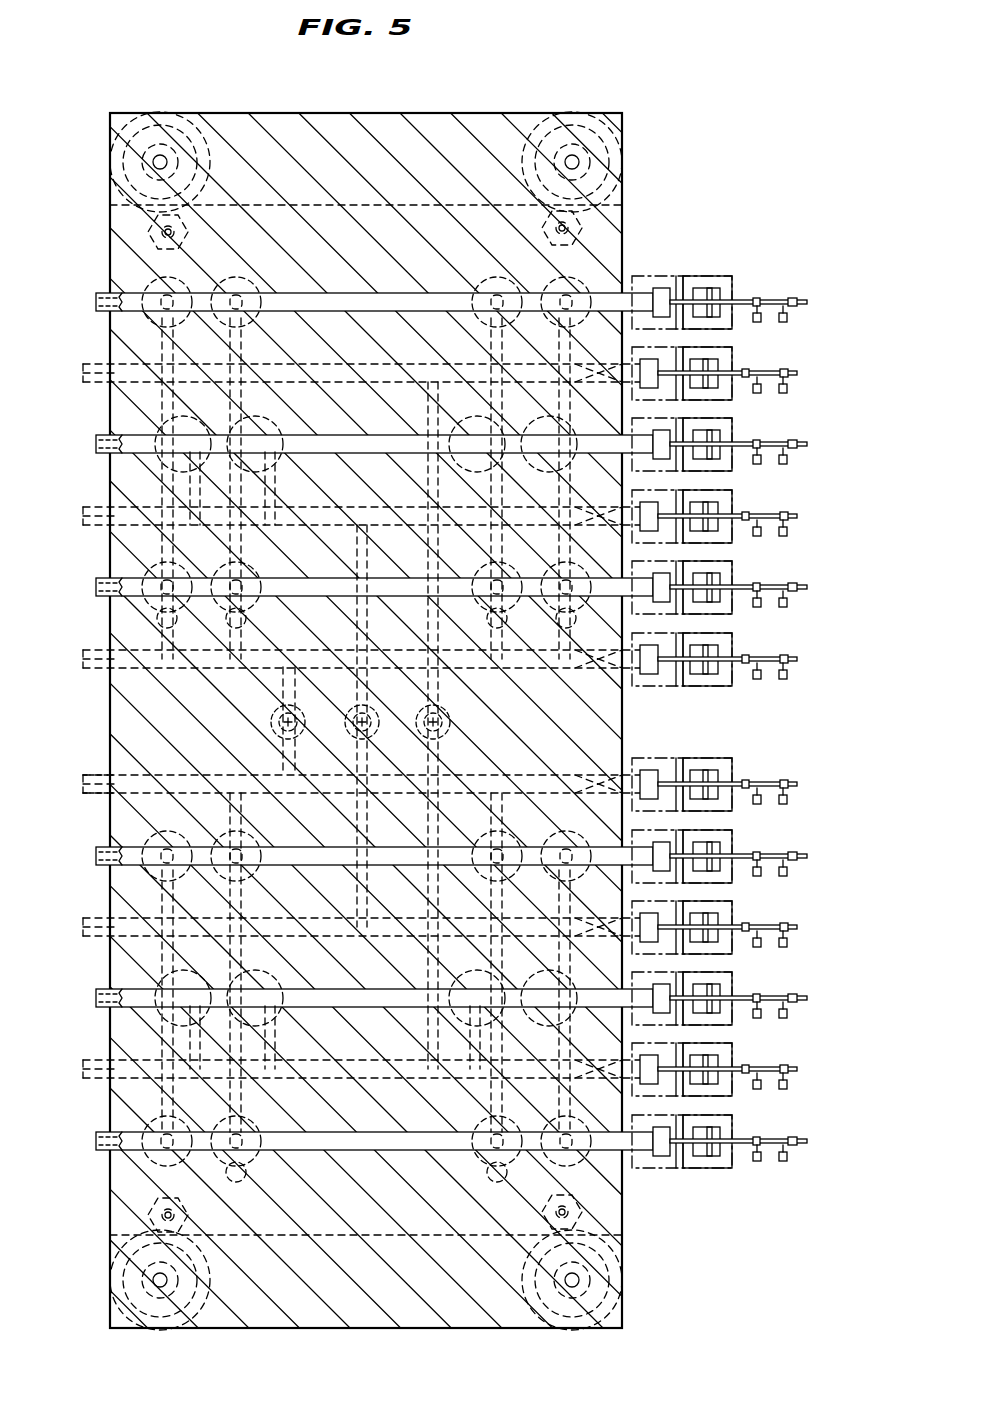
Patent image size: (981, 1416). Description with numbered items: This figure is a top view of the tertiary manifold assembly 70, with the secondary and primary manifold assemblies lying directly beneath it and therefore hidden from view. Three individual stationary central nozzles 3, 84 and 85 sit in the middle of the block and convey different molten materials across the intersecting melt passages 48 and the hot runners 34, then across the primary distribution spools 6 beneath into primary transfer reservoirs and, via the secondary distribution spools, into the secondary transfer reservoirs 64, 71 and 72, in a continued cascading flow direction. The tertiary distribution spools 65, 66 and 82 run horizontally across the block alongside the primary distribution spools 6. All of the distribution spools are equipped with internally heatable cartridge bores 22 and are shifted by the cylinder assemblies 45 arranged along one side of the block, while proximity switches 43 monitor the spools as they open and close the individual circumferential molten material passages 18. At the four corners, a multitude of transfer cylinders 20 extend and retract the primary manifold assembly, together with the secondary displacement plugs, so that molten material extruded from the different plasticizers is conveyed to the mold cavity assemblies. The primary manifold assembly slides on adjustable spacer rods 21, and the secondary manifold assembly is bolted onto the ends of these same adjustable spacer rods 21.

The stationary central nozzle 3 is at (380, 708).
The primary distribution spool 6 is at (83, 375).
The circumferential molten material passage 18 is at (180, 540).
The transfer cylinder 20 is at (112, 163).
The adjustable spacer rod 21 is at (116, 234).
The internally heatable cartridge bore 22 is at (83, 775).
The hot runner 34 is at (382, 372).
The proximity switch 43 is at (762, 320).
The cylinder assembly 45 is at (720, 278).
The intersecting melt passage 48 is at (418, 487).
The secondary transfer reservoir 64 is at (260, 402).
The tertiary distribution spool 65 is at (96, 590).
The tertiary distribution spool 66 is at (96, 447).
The tertiary manifold assembly 70 is at (612, 708).
The secondary transfer reservoir 71 is at (178, 620).
The secondary transfer reservoir 72 is at (192, 261).
The tertiary distribution spool 82 is at (96, 305).
The stationary central nozzle 84 is at (270, 722).
The stationary central nozzle 85 is at (450, 710).